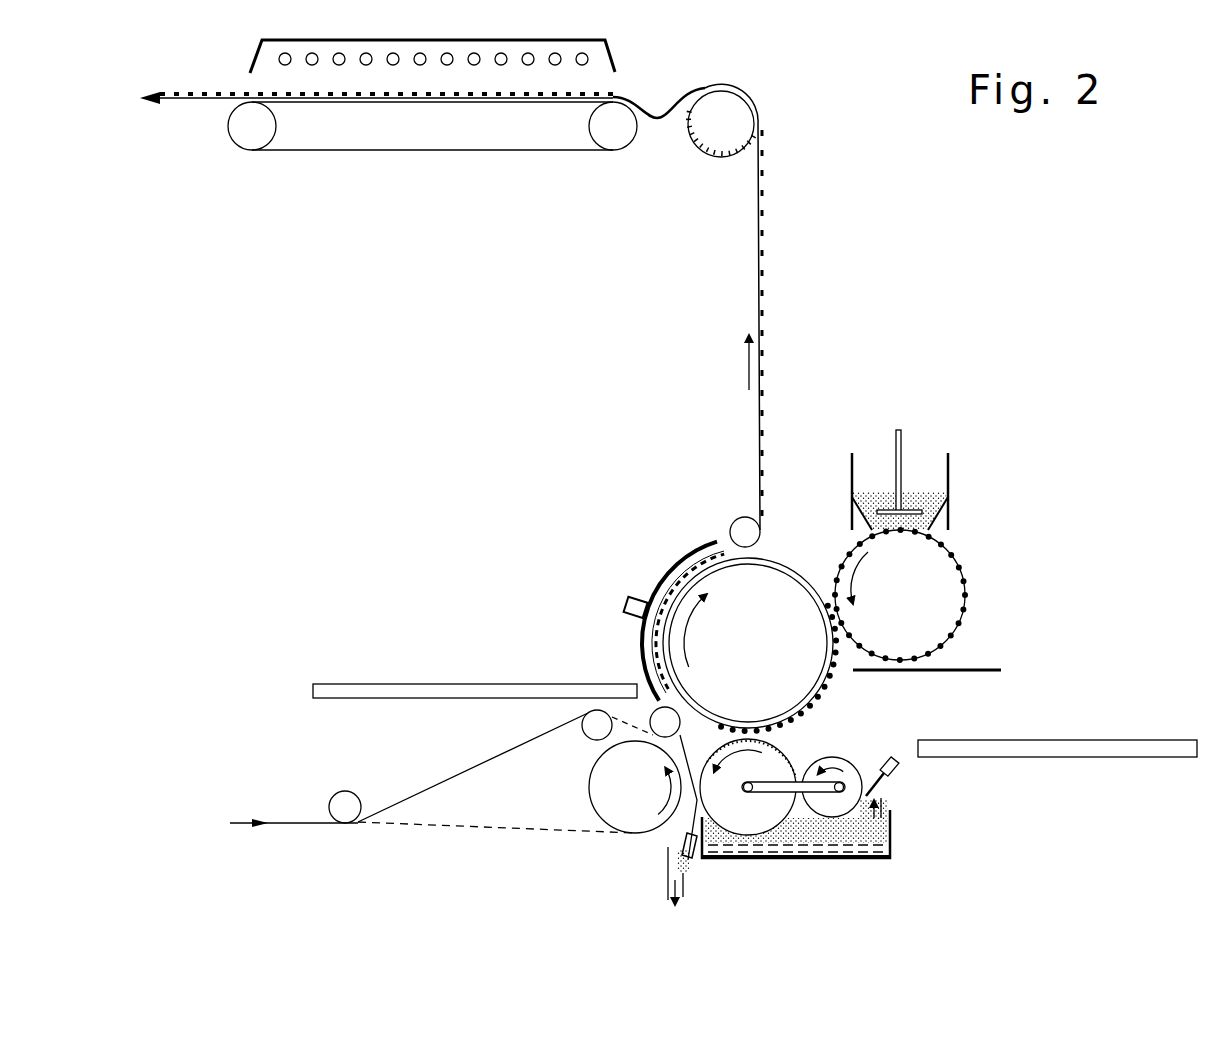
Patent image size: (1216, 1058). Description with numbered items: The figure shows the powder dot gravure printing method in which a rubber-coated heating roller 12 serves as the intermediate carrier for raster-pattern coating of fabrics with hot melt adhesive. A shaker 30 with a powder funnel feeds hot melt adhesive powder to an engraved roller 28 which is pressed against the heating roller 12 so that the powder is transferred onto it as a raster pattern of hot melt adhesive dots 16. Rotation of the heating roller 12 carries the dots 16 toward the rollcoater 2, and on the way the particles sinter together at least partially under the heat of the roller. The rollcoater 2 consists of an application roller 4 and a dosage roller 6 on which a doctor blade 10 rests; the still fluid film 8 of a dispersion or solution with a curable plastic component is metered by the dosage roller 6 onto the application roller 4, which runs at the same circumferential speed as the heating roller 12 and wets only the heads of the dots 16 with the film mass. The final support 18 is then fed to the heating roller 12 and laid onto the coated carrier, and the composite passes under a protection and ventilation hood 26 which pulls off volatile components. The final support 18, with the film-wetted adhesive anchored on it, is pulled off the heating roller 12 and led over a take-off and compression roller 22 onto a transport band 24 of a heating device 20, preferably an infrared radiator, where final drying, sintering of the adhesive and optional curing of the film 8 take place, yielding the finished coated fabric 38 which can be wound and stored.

The rollcoater 2 is at (898, 830).
The application roller 4 is at (768, 765).
The dosage roller 6 is at (854, 782).
The film 8 is at (797, 827).
The doctor blade 10 is at (885, 791).
The rubber-coated heating roller 12 is at (761, 645).
The hot melt adhesive dots 16 is at (820, 708).
The final support 18 is at (480, 764).
The heating device 20 is at (598, 53).
The take-off and compression roller 22 is at (722, 138).
The transport band 24 is at (467, 153).
The protection and ventilation hood 26 is at (648, 662).
The engraved roller 28 is at (913, 610).
The shaker 30 is at (918, 463).
The finished coated fabric 38 is at (190, 102).